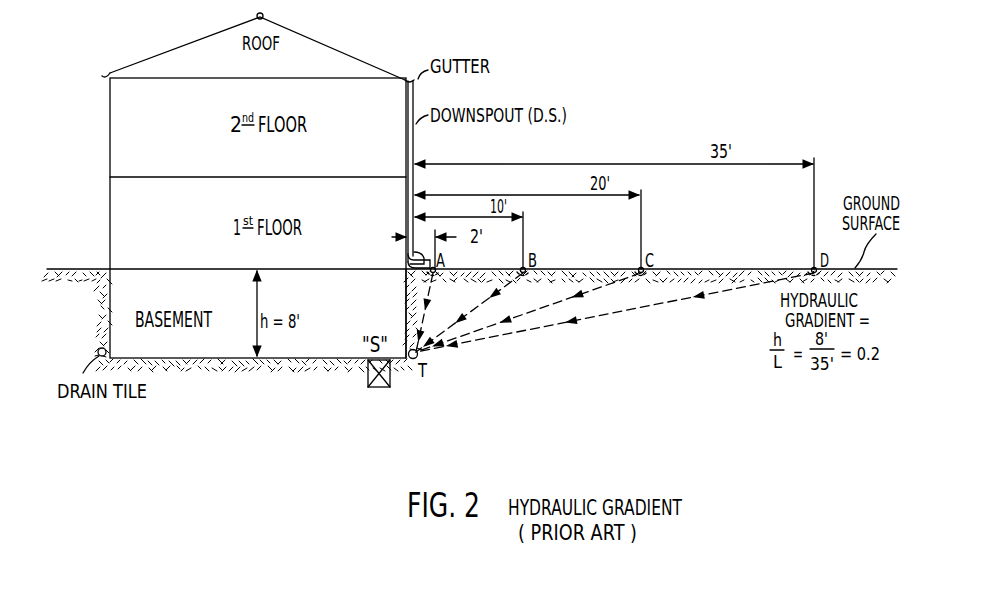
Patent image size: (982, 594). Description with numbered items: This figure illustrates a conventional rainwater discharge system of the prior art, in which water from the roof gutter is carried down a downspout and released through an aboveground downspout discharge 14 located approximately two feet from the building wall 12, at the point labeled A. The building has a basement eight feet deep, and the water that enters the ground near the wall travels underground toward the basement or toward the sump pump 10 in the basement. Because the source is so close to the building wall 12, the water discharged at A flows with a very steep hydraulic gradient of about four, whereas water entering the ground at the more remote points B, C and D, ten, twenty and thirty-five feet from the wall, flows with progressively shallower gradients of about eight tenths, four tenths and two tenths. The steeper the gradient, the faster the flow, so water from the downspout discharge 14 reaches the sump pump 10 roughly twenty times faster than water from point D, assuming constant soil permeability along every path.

The sump pump 10 is at (367, 380).
The building wall 12 is at (405, 295).
The downspout discharge 14 is at (408, 254).